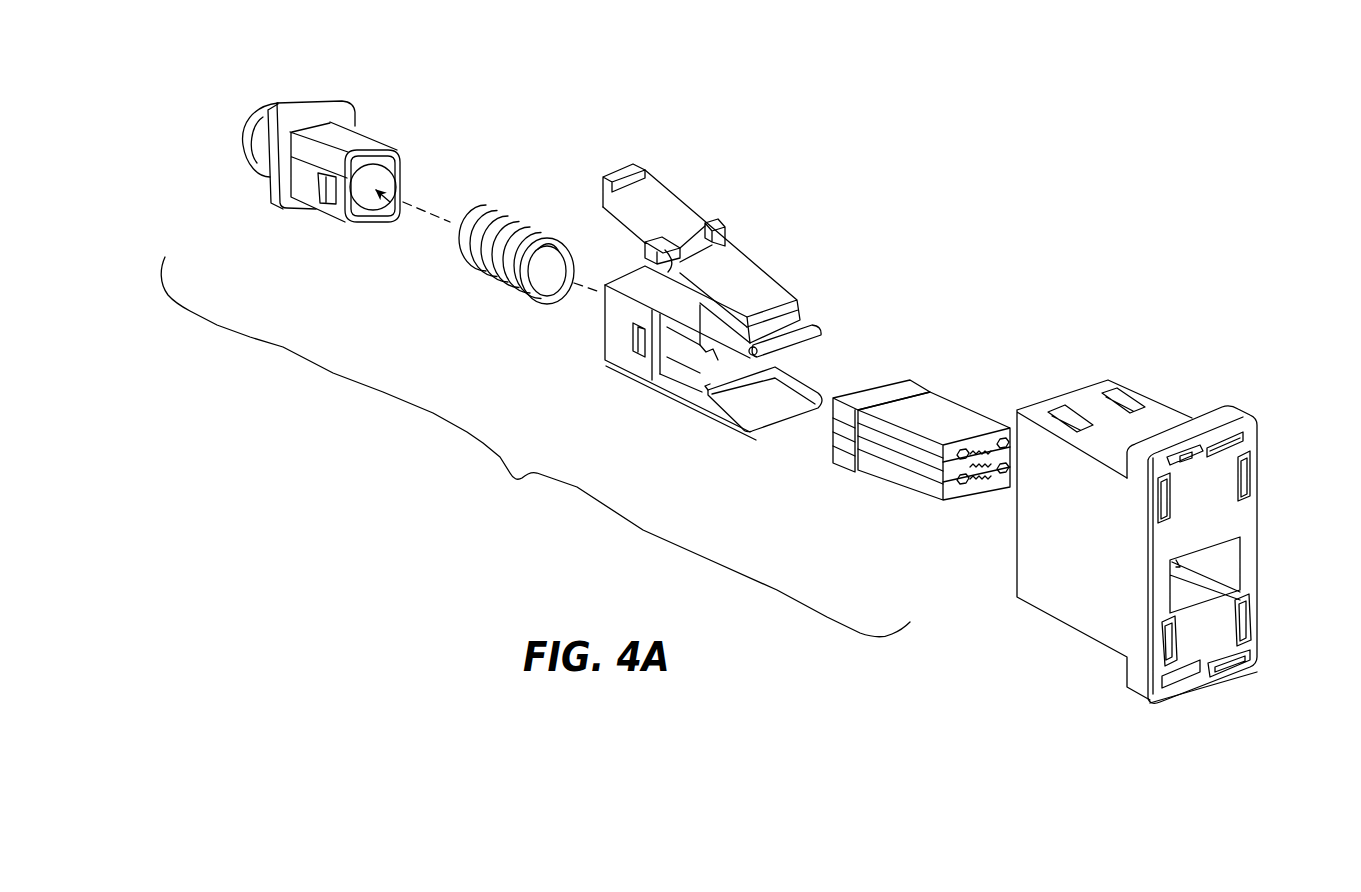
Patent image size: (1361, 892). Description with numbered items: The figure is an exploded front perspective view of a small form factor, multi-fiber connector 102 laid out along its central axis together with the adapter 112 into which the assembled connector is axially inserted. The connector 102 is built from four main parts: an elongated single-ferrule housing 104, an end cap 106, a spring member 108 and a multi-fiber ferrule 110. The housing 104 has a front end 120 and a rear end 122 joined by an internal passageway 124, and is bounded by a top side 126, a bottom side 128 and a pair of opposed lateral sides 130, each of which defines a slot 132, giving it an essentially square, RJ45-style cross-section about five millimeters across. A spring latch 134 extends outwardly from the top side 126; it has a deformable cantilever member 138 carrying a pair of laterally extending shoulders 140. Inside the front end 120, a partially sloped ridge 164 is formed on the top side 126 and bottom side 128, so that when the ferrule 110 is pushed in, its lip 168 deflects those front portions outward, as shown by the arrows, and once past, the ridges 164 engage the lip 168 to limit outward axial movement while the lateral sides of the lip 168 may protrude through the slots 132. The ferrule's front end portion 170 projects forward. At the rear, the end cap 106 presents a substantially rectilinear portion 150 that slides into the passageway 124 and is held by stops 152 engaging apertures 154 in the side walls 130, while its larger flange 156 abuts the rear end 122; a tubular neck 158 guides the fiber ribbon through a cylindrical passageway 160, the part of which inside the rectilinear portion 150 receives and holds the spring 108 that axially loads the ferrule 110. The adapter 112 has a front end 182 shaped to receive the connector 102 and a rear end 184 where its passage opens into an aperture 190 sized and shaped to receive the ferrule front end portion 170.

The multi-fiber connector 102 is at (535, 447).
The elongated single-ferrule housing 104 is at (803, 338).
The end cap 106 is at (391, 70).
The spring member 108 is at (481, 279).
The multi-fiber ferrule 110 is at (931, 448).
The adapter 112 is at (1145, 587).
The front end 120 is at (750, 440).
The rear end 122 is at (673, 373).
The internal passageway 124 is at (790, 400).
The top side 126 is at (621, 282).
The bottom side 128 is at (680, 428).
The lateral sides 130 is at (620, 323).
The slot 132 is at (676, 358).
The spring latch 134 is at (712, 221).
The cantilever member 138 is at (656, 208).
The laterally extending shoulders 140 is at (710, 225).
The rectilinear portion 150 is at (363, 137).
The stops 152 is at (326, 210).
The apertures 154 is at (636, 342).
The flange 156 is at (320, 110).
The tubular neck 158 is at (271, 104).
The cylindrical passageway 160 is at (398, 220).
The partially sloped ridge 164 is at (708, 392).
The lip 168 is at (881, 388).
The front end portion 170 is at (905, 492).
The front end 182 is at (1012, 605).
The rear end 184 is at (1153, 705).
The aperture 190 is at (1230, 545).